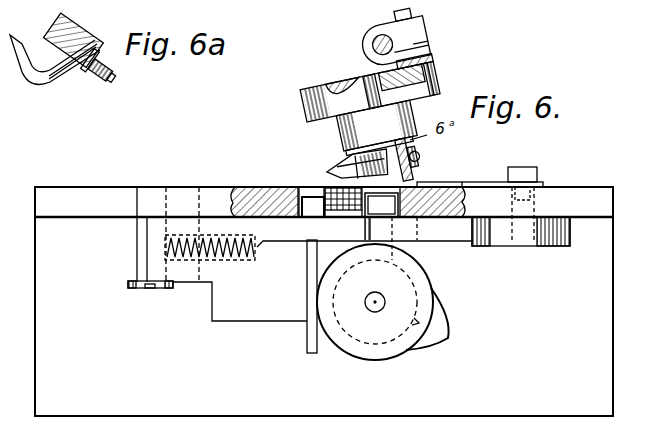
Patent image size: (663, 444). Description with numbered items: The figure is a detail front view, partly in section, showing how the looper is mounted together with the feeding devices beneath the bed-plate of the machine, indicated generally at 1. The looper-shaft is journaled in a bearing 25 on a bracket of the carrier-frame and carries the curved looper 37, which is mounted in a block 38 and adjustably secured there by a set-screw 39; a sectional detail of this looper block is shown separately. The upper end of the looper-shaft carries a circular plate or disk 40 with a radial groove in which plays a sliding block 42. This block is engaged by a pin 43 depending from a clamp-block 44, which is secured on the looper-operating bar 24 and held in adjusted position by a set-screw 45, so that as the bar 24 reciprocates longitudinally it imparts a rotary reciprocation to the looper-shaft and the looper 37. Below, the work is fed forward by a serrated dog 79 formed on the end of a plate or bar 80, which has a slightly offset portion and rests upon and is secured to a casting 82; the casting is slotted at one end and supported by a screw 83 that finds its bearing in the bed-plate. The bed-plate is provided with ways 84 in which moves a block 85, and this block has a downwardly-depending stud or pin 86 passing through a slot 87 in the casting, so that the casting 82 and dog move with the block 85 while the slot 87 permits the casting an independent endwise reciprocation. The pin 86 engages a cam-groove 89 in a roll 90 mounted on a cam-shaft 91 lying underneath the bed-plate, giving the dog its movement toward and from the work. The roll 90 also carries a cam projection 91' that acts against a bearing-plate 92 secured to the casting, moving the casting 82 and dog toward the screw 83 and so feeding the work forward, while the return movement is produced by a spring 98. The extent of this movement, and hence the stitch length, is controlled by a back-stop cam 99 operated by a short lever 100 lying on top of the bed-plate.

In FIG. 6, the machine frame 1 is at (210, 190).
In FIG. 6, the looper-operating bar 24 is at (377, 40).
In FIG. 6, the bearing 25 is at (377, 128).
In FIG. 6A, the curved looper 37 is at (47, 76).
In FIG. 6, the curved looper 37 is at (353, 160).
In FIG. 6A, the block 38 is at (100, 43).
In FIG. 6, the block 38 is at (415, 143).
In FIG. 6A, the set-screw 39 is at (113, 72).
In FIG. 6, the set-screw 39 is at (418, 155).
In FIG. 6, the circular plate or disk 40 is at (310, 103).
In FIG. 6, the sliding block 42 is at (434, 73).
In FIG. 6, the pin 43 is at (430, 67).
In FIG. 6, the clamp-block 44 is at (422, 28).
In FIG. 6, the set-screw 45 is at (420, 17).
In FIG. 6, the serrated dog 79 is at (330, 190).
In FIG. 6, the plate or bar 80 is at (463, 239).
In FIG. 6, the casting 82 is at (240, 301).
In FIG. 6, the screw 83 is at (165, 288).
In FIG. 6, the ways 84 is at (298, 188).
In FIG. 6, the block 85 is at (391, 226).
In FIG. 6, the stud or pin 86 is at (395, 247).
In FIG. 6, the slot 87 is at (420, 230).
In FIG. 6, the cam-groove 89 is at (416, 290).
In FIG. 6, the roll 90 is at (376, 302).
In FIG. 6, the cam-shaft 91 is at (366, 293).
In FIG. 6, the cam projection 91' is at (440, 320).
In FIG. 6, the bearing-plate 92 is at (319, 309).
In FIG. 6, the spring 98 is at (241, 258).
In FIG. 6, the back-stop cam 99 is at (555, 247).
In FIG. 6, the short lever 100 is at (497, 182).